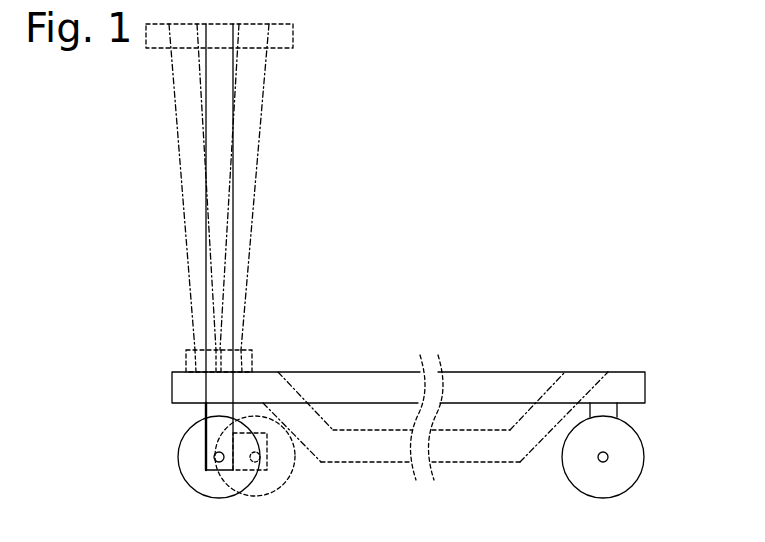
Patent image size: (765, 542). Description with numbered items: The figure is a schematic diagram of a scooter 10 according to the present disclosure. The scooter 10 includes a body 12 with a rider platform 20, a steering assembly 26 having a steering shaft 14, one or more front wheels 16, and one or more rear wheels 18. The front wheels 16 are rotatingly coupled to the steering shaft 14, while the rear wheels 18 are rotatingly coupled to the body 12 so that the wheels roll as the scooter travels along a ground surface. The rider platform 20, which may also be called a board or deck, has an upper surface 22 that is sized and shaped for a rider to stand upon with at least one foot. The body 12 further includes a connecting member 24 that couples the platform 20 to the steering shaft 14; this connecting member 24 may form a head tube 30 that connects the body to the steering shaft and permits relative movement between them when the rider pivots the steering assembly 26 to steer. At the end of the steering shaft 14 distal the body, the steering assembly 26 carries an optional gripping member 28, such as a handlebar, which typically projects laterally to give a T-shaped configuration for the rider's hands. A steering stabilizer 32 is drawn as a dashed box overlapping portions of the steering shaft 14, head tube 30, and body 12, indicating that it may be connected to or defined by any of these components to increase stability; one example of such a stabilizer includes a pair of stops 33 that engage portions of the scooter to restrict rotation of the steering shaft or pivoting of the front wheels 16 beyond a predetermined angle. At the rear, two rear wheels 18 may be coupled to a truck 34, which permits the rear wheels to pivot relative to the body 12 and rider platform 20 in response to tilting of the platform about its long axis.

The scooter 10 is at (576, 119).
The body 12 is at (579, 344).
The steering shaft 14 is at (183, 216).
The front wheel 16 is at (188, 487).
The rear wheel 18 is at (645, 468).
The rider platform 20 is at (477, 426).
The upper surface 22 is at (386, 430).
The connecting member 24 is at (271, 368).
The steering assembly 26 is at (158, 165).
The gripping member 28 is at (284, 52).
The head tube 30 is at (183, 402).
The steering stabilizer 32 is at (196, 343).
The stops 33 is at (252, 350).
The truck 34 is at (650, 452).